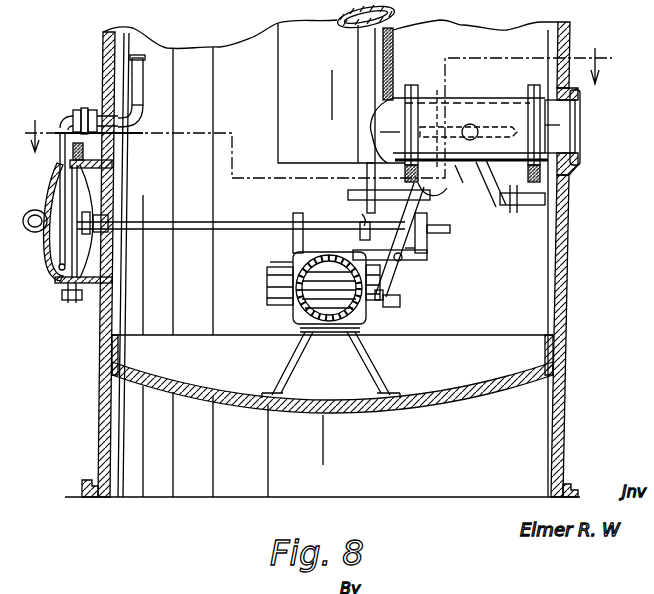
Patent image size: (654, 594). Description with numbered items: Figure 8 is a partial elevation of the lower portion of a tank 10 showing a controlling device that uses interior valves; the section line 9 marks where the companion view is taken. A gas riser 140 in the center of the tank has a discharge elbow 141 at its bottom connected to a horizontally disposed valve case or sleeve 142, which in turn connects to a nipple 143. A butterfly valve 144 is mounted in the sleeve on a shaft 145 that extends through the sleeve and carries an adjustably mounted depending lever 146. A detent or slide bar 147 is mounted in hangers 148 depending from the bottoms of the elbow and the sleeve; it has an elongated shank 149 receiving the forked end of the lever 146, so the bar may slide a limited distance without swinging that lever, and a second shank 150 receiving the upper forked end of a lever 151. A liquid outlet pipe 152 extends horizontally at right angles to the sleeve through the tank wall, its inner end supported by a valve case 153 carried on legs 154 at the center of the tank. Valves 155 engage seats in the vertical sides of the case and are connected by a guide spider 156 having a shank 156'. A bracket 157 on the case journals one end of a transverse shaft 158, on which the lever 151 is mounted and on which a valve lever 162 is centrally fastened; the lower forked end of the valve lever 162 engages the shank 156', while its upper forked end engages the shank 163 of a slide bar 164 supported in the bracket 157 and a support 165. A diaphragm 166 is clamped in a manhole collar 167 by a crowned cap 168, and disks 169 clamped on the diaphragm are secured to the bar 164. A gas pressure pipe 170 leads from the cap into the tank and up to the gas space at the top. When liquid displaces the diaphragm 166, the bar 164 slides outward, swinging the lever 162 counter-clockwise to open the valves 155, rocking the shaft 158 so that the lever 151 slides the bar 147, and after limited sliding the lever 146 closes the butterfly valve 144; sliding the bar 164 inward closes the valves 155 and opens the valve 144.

The tank 10 is at (572, 34).
The section line 9- 9 is at (318, 115).
The gas riser 140 is at (402, 22).
The discharge elbow 141 is at (393, 118).
The valve case or sleeve 142 is at (487, 105).
The nipple 143 is at (578, 122).
The butterfly valve 144 is at (421, 119).
The shaft 145 is at (470, 124).
The depending lever 146 is at (465, 203).
The detent or slide bar 147 is at (530, 204).
The hangers 148 is at (367, 184).
The elongated shank 149 is at (496, 208).
The second shank 150 is at (427, 197).
The lever 151 is at (427, 215).
The liquid outlet pipe 152 is at (330, 326).
The valve case 153 is at (367, 318).
The legs 154 is at (386, 377).
The valves 155 is at (270, 303).
The guide spider 156 is at (266, 259).
The shank 156' is at (416, 297).
The bracket 157 is at (425, 262).
The transverse shaft 158 is at (416, 248).
The valve lever 162 is at (390, 270).
The shank 163 is at (380, 228).
The slide bar 164 is at (349, 217).
The support 165 is at (293, 222).
The diaphragm 166 is at (108, 196).
The manhole collar 167 is at (92, 278).
The crowned cap 168 is at (47, 258).
The disks 169 is at (109, 222).
The gas pressure pipe 170 is at (144, 84).